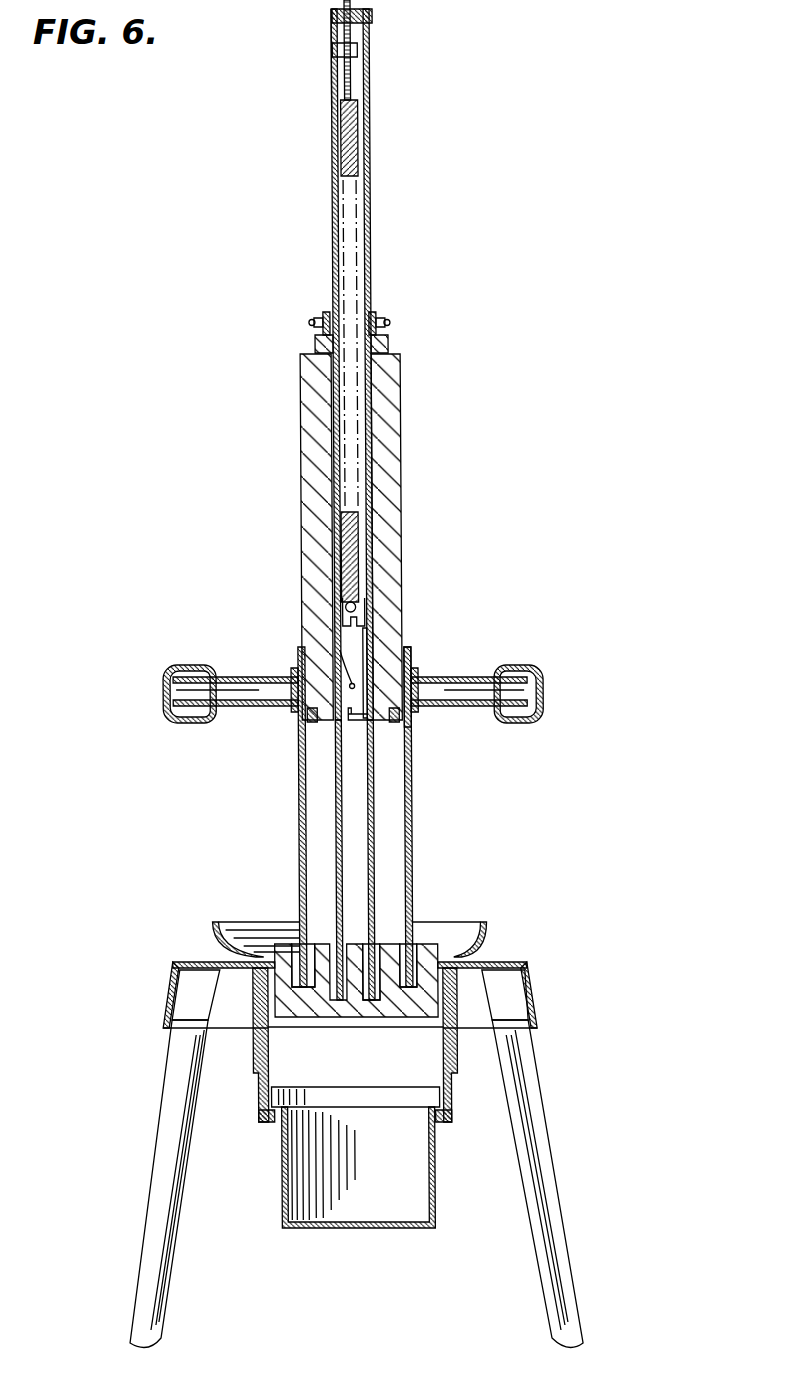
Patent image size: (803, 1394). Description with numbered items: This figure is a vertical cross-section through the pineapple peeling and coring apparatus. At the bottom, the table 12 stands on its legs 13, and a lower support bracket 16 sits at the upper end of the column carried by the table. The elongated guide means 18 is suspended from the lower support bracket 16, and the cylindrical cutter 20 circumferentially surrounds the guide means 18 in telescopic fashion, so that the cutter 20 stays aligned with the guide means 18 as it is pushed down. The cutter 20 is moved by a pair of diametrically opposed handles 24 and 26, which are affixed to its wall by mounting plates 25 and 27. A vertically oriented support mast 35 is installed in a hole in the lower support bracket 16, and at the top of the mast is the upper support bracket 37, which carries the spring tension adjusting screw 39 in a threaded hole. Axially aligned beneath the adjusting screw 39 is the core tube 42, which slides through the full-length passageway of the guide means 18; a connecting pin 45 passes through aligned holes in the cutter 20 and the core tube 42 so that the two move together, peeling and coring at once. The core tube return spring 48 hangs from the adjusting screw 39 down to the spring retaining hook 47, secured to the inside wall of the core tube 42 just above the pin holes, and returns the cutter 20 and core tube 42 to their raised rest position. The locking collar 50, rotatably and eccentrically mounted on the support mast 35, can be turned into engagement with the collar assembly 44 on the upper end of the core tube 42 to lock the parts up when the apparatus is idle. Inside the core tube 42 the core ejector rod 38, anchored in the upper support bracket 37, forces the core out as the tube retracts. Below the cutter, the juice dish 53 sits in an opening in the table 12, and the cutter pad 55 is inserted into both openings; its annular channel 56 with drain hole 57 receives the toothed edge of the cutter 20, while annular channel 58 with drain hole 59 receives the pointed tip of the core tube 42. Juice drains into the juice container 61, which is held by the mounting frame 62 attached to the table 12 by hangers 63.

The table 12 is at (164, 986).
The legs 13 is at (143, 1270).
The lower support bracket 16 is at (313, 345).
The guide means 18 is at (298, 446).
The cylindrical cutter 20 is at (405, 852).
The handle 24 is at (232, 677).
The mounting plate 25 is at (288, 708).
The handle 26 is at (480, 677).
The mounting plate 27 is at (409, 672).
The support mast 35 is at (334, 96).
The upper support bracket 37 is at (332, 14).
The core ejector rod 38 is at (369, 282).
The spring tension adjusting screw 39 is at (344, 78).
The core tube 42 is at (366, 780).
The collar assembly 44 is at (382, 318).
The connecting pin 45 is at (345, 683).
The spring retaining hook 47 is at (342, 626).
The core tube return spring 48 is at (340, 166).
The locking collar 50 is at (332, 50).
The juice dish 53 is at (484, 928).
The cutter pad 55 is at (232, 922).
The annular channel 56 is at (412, 945).
The drain hole 57 is at (412, 1012).
The annular channel 58 is at (300, 936).
The drain hole 59 is at (370, 1004).
The juice container 61 is at (355, 1229).
The mounting frame 62 is at (253, 1112).
The hangers 63 is at (254, 1046).